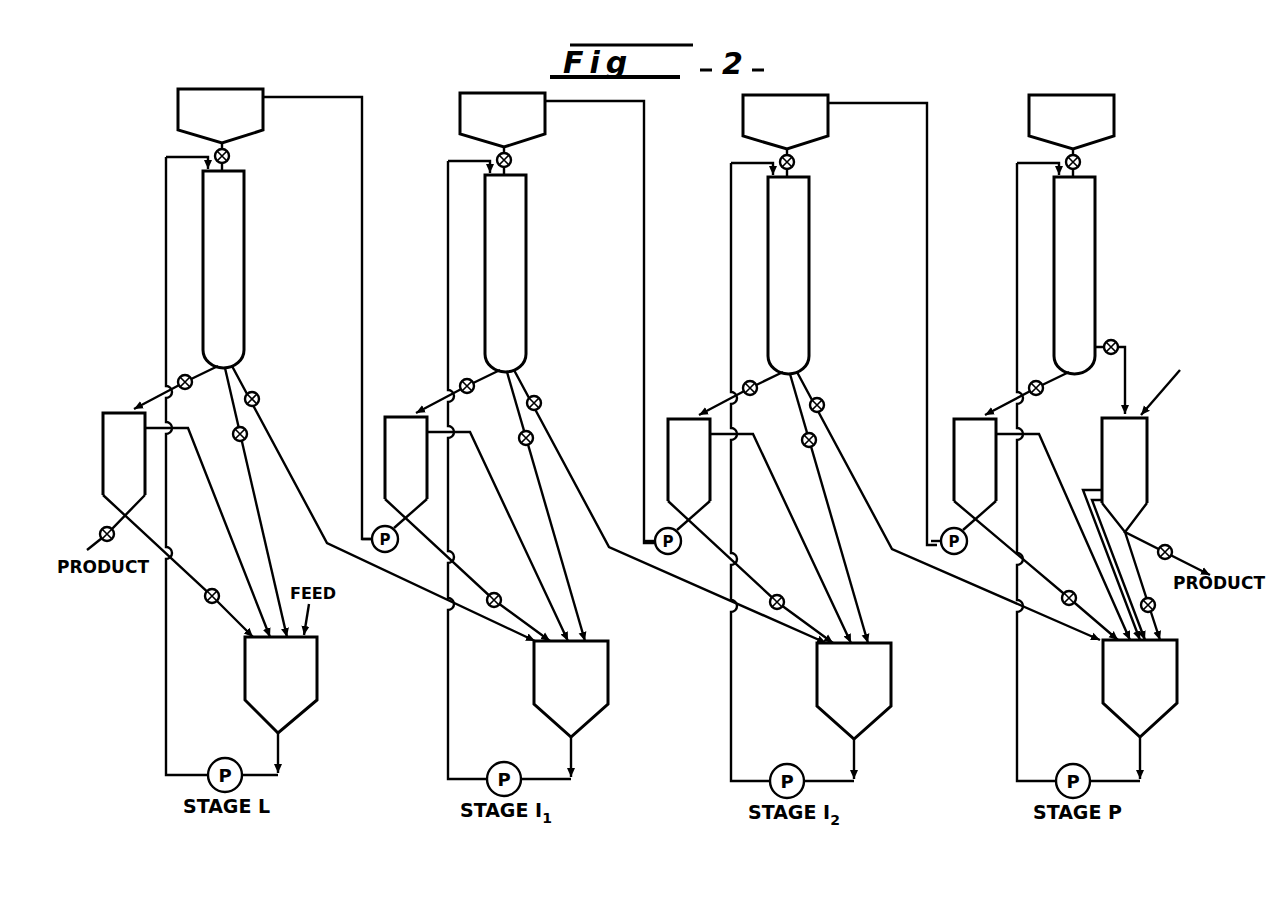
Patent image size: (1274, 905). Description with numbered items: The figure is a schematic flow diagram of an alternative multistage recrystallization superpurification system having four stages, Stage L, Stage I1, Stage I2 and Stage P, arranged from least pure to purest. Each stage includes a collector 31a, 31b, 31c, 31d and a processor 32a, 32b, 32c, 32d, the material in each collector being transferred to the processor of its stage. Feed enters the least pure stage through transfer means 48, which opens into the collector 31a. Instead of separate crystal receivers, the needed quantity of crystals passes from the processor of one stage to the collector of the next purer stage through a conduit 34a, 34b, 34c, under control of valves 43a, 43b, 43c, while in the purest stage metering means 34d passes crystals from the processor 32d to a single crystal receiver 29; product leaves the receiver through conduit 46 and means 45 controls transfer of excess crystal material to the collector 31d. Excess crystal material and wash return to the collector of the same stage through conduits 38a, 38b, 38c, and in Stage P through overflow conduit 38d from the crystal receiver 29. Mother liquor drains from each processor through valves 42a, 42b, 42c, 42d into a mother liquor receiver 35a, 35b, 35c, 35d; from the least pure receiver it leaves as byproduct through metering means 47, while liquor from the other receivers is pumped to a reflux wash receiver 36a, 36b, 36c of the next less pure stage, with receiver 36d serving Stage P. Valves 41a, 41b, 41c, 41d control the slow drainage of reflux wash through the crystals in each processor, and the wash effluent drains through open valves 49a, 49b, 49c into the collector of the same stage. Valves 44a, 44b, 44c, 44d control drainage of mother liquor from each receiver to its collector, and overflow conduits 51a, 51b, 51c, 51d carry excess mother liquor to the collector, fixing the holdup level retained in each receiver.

The crystal receiver 29 is at (1124, 460).
The collector 31a is at (281, 685).
The collector 31b is at (571, 689).
The collector 31c is at (854, 691).
The collector 31d is at (1140, 688).
The processor 32a is at (205, 264).
The processor 32b is at (505, 273).
The processor 32c is at (788, 275).
The processor 32d is at (1074, 275).
The conduit 34a is at (296, 482).
The conduit 34b is at (670, 506).
The conduit 34c is at (948, 506).
The metering means 34d is at (1134, 375).
The mother liquor receiver 35a is at (108, 468).
The mother liquor receiver 35b is at (406, 472).
The mother liquor receiver 35c is at (689, 474).
The mother liquor receiver 35d is at (975, 474).
The reflux wash receiver 36a is at (204, 121).
The reflux wash receiver 36b is at (502, 120).
The reflux wash receiver 36c is at (785, 122).
The reflux wash receiver 36d is at (1071, 122).
The conduit 38a is at (270, 556).
The conduit 38b is at (546, 506).
The conduit 38c is at (829, 508).
The overflow conduit 38d is at (1101, 548).
The valve 41a is at (230, 154).
The valve 41b is at (532, 161).
The valve 41c is at (814, 163).
The valve 41d is at (1101, 163).
The valve 42a is at (190, 389).
The valve 42b is at (458, 397).
The valve 42c is at (741, 399).
The valve 42d is at (1027, 399).
The valve 43a is at (259, 398).
The valve 43b is at (556, 392).
The valve 43c is at (838, 394).
The valve 44a is at (212, 588).
The valve 44b is at (467, 570).
The valve 44c is at (750, 572).
The valve 44d is at (1036, 570).
The means 45 is at (1152, 571).
The conduit 46 is at (1168, 539).
The metering means 47 is at (103, 532).
The transfer means 48 is at (310, 612).
The valve 49a is at (233, 432).
The valve 49b is at (503, 434).
The valve 49c is at (786, 436).
The overflow conduit 51a is at (220, 519).
The overflow conduit 51b is at (497, 536).
The overflow conduit 51c is at (780, 538).
The overflow conduit 51d is at (1063, 537).